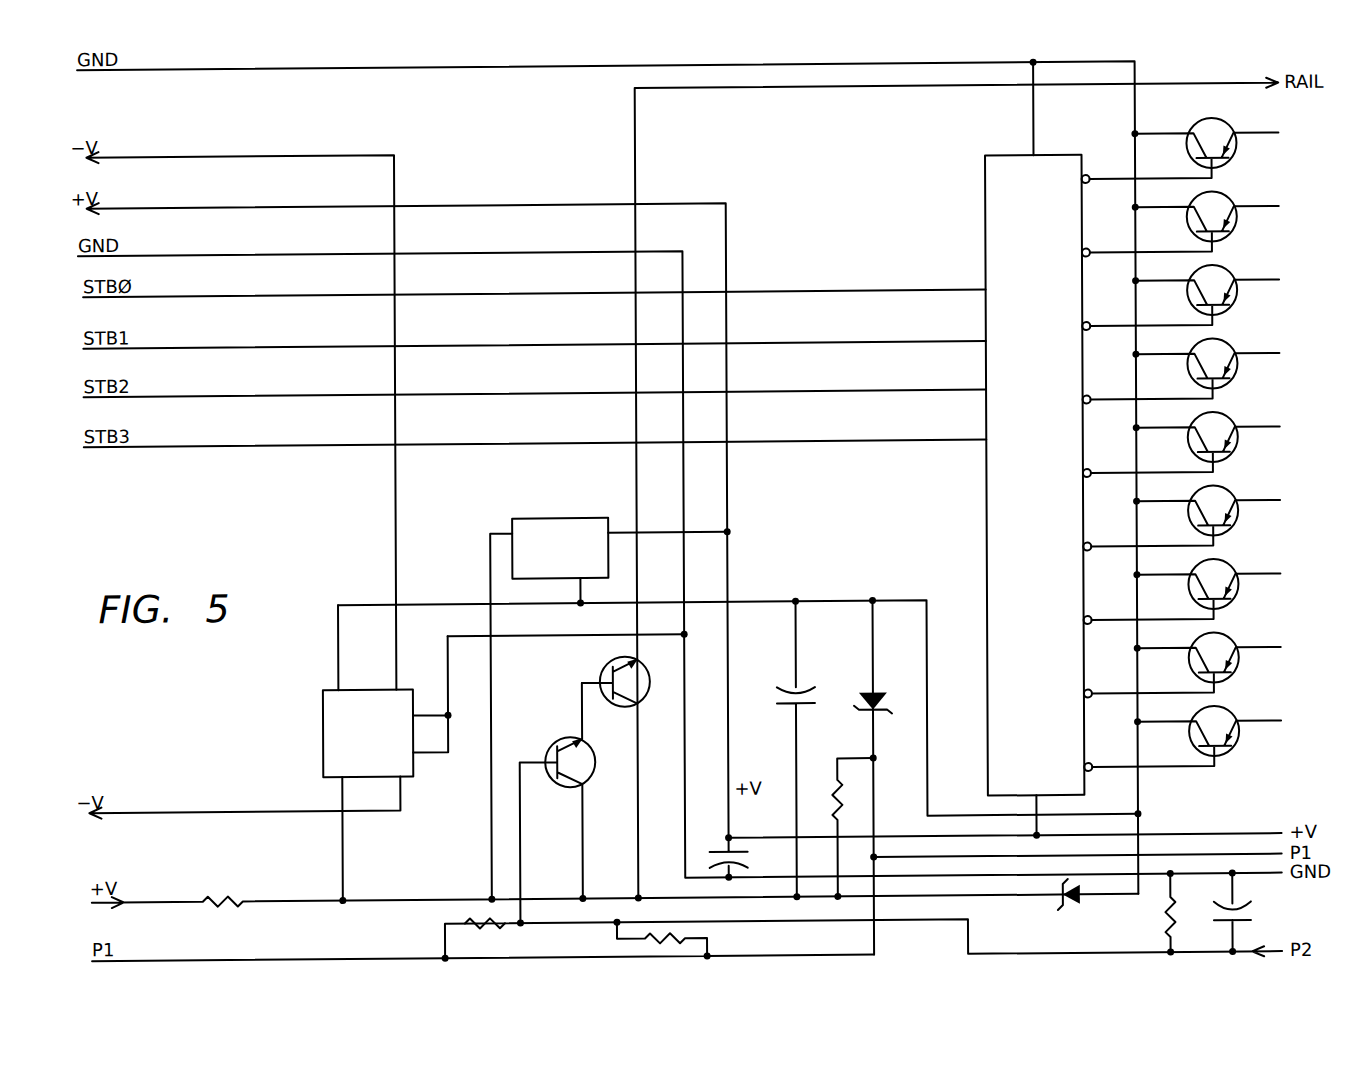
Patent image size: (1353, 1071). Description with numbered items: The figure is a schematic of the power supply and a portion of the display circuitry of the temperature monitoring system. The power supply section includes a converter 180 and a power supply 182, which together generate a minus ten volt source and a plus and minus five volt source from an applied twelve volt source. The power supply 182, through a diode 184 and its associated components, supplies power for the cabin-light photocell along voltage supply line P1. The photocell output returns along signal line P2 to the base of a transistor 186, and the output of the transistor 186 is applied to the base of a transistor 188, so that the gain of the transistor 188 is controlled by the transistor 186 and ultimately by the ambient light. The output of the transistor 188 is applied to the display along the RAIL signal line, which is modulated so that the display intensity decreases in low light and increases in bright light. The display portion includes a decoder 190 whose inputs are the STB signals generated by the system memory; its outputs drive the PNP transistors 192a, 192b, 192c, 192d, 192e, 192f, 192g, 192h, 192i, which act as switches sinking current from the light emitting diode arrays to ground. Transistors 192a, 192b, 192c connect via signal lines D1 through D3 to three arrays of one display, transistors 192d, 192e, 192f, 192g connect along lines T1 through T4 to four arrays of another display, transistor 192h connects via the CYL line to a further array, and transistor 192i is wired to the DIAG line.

The converter 180 is at (345, 762).
The power supply 182 is at (590, 517).
The diode 184 is at (876, 692).
The transistor 186 is at (563, 738).
The transistor 188 is at (607, 668).
The decoder 190 is at (1000, 250).
The transistor 192a is at (1212, 128).
The transistor 192b is at (1205, 233).
The transistor 192c is at (1205, 306).
The transistor 192d is at (1205, 380).
The transistor 192e is at (1205, 453).
The transistor 192f is at (1205, 527).
The transistor 192g is at (1205, 600).
The transistor 192h is at (1205, 674).
The transistor 192i is at (1205, 747).